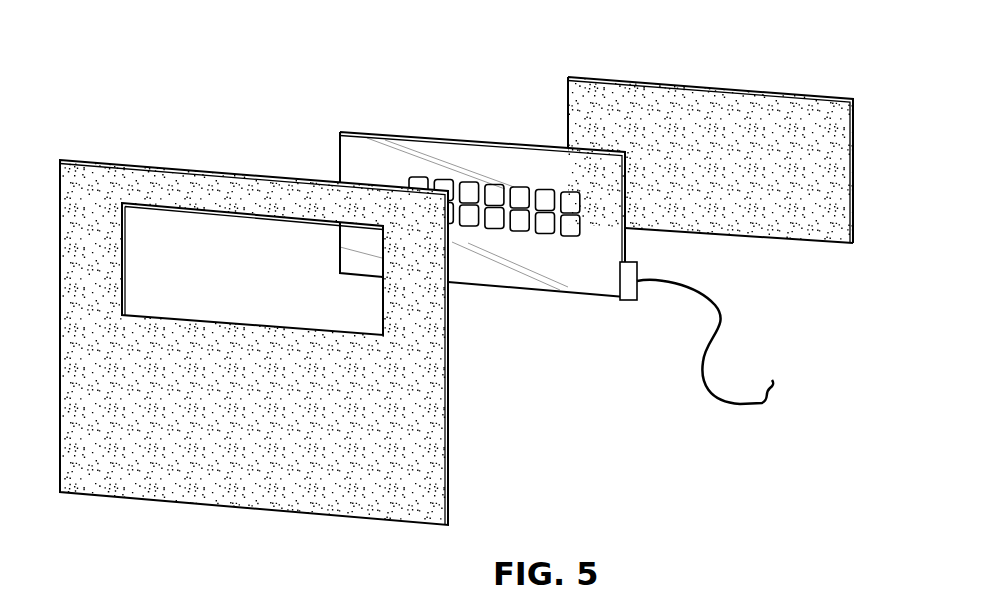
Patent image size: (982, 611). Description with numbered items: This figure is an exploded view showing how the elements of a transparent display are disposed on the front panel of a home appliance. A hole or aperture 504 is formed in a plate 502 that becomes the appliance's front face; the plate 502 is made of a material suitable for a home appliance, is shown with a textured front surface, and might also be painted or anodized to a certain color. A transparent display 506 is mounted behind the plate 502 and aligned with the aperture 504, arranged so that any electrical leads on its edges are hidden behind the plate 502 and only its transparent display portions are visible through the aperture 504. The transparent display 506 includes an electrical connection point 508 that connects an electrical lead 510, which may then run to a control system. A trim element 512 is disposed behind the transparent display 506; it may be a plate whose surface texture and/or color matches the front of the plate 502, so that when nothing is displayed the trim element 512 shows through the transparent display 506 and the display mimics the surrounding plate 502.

The plate 502 is at (206, 489).
The aperture 504 is at (203, 228).
The transparent display 506 is at (482, 158).
The electrical connection point 508 is at (637, 289).
The electrical lead 510 is at (722, 338).
The trim element 512 is at (718, 105).